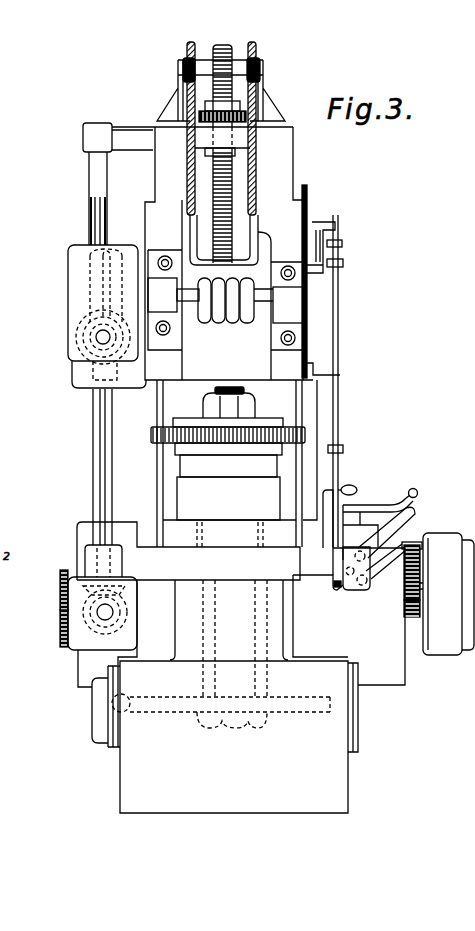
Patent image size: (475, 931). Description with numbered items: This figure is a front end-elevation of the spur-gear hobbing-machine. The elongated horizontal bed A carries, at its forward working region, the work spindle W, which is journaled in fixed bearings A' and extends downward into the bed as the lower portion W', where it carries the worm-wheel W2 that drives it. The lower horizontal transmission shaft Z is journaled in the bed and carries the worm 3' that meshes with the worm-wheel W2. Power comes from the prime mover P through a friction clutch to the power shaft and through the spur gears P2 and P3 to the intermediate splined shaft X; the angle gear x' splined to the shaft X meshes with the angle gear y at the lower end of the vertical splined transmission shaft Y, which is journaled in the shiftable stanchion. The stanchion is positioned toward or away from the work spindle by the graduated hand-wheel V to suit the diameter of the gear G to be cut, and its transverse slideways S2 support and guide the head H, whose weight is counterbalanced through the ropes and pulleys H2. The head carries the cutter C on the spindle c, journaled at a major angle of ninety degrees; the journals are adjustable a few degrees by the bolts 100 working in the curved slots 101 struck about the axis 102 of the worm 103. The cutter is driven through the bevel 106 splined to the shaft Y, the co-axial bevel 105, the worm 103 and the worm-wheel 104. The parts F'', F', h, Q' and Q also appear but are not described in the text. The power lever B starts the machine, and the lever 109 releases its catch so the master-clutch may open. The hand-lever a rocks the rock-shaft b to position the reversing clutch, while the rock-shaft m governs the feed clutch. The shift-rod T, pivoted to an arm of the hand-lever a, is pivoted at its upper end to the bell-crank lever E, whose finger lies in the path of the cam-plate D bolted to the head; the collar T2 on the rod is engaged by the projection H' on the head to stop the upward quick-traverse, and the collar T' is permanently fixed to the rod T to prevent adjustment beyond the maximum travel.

The ropes and pulleys H2 is at (190, 117).
The guide rods F'' is at (207, 153).
The feed screw F' is at (239, 154).
The head H is at (198, 251).
The cam-plate D is at (305, 197).
The bell-crank lever E is at (322, 221).
The shift-rod T is at (348, 381).
The collar or dog T2 is at (343, 263).
The bolts 100 is at (166, 256).
The curved slots 101 is at (158, 259).
The projection H' is at (342, 375).
The splined transmission shaft Y is at (90, 208).
The worm-wheel 104 is at (104, 271).
The co-axial bevel 105 is at (88, 333).
The axis of worm 102 is at (98, 338).
The worm 103 is at (86, 348).
The bevel 106 is at (68, 360).
The spindle c is at (188, 311).
The cutter C is at (241, 322).
The work spindle W is at (220, 386).
The gear G is at (152, 443).
The transverse slideways S2 is at (160, 497).
The fixed bearings A' is at (228, 487).
The collar T' is at (352, 442).
The hand-wheel V is at (327, 490).
The power lever B is at (377, 504).
The rock-shaft m is at (356, 561).
The lever arm h is at (415, 512).
The lever 109 is at (386, 554).
The hand-lever a is at (422, 547).
The rock-shaft b is at (345, 579).
The gear Q' is at (391, 579).
The gear Q is at (392, 608).
The prime mover P is at (448, 594).
The spur gear P2 is at (60, 574).
The spur gear P3 is at (60, 638).
The intermediate splined shaft X is at (103, 615).
The angle gear y is at (123, 591).
The angle gear x' is at (121, 616).
The work spindle lower portion W' is at (203, 638).
The bed A is at (233, 737).
The transmission shaft Z is at (120, 706).
The worm 3' is at (137, 698).
The worm-wheel W2 is at (318, 712).